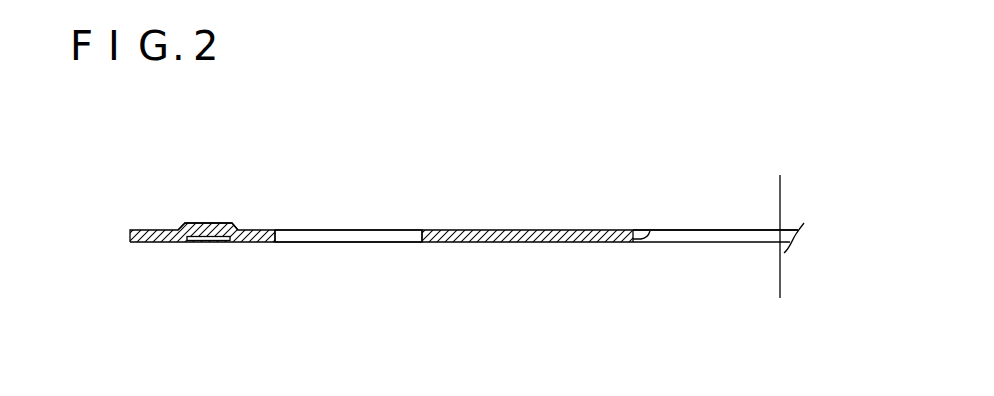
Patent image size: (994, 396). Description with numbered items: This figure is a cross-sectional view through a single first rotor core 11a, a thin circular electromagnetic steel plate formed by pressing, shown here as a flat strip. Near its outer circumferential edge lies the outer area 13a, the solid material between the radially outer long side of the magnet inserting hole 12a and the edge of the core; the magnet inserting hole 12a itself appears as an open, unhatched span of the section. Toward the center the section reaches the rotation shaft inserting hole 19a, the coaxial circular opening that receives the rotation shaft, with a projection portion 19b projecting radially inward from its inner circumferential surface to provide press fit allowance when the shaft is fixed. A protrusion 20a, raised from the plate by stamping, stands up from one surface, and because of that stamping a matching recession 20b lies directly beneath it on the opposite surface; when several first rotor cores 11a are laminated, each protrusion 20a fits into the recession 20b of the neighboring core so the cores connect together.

The first rotor core 11a is at (433, 204).
The outer area 13a is at (138, 230).
The protrusion 20a is at (215, 223).
The recession 20b is at (206, 243).
The magnet inserting hole 12a is at (362, 223).
The rotation shaft inserting hole 19a is at (723, 223).
The projection portion 19b is at (645, 230).